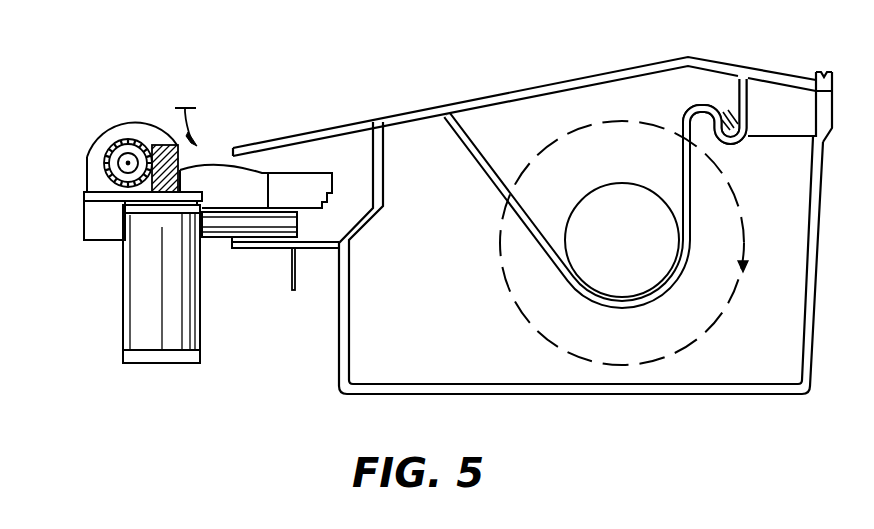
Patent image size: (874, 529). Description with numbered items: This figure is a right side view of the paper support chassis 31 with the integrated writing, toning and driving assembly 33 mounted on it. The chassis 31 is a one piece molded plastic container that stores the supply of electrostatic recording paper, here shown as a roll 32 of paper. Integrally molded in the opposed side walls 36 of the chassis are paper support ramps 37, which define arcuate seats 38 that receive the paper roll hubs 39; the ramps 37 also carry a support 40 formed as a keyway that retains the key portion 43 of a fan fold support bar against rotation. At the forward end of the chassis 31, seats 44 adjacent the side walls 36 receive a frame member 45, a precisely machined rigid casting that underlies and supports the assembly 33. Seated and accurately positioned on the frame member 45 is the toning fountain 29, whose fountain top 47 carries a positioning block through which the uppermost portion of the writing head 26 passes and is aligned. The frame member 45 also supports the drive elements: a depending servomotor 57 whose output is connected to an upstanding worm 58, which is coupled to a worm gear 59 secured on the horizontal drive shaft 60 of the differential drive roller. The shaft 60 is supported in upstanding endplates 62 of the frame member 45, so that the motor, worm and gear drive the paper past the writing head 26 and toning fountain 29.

The writing head 26 is at (292, 262).
The toning fountain 29 is at (222, 167).
The support chassis 31 is at (821, 216).
The roll of paper 32 is at (742, 264).
The writing, toning and driving assembly 33 is at (184, 116).
The side walls 36 is at (556, 95).
The paper support ramps 37 is at (492, 162).
The arcuate seats 38 is at (590, 289).
The paper roll hubs 39 is at (652, 270).
The support 40 is at (731, 108).
The key portion 43 is at (731, 133).
The seats 44 is at (322, 247).
The frame member 45 is at (100, 197).
The fountain top 47 is at (248, 192).
The servomotor 57 is at (132, 277).
The worm 58 is at (166, 150).
The worm gear 59 is at (112, 153).
The drive shaft 60 is at (118, 166).
The endplates 62 is at (87, 162).